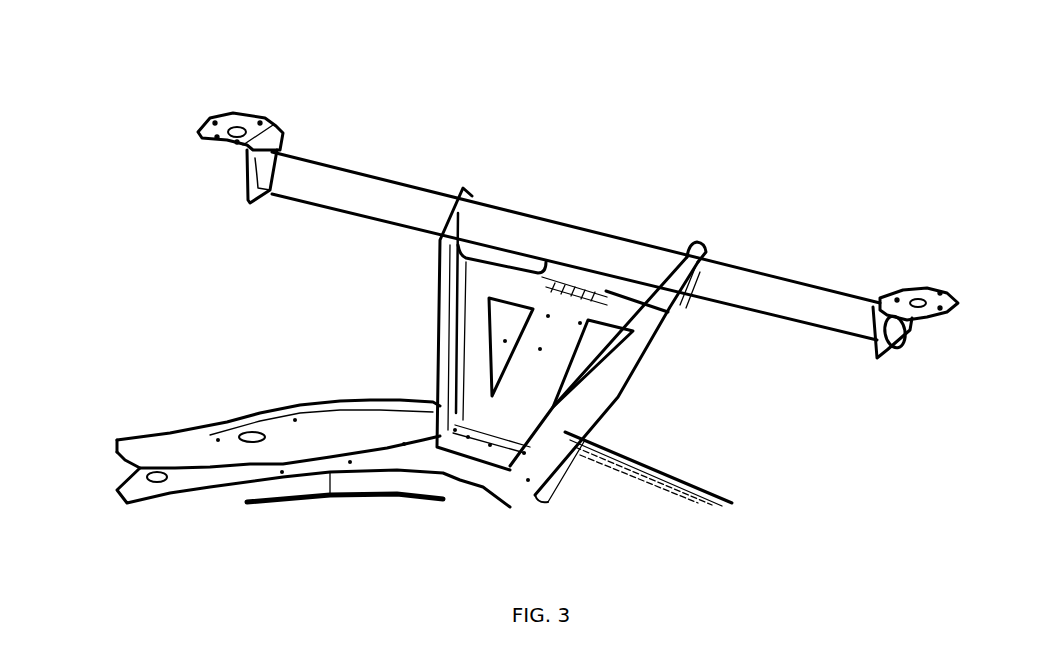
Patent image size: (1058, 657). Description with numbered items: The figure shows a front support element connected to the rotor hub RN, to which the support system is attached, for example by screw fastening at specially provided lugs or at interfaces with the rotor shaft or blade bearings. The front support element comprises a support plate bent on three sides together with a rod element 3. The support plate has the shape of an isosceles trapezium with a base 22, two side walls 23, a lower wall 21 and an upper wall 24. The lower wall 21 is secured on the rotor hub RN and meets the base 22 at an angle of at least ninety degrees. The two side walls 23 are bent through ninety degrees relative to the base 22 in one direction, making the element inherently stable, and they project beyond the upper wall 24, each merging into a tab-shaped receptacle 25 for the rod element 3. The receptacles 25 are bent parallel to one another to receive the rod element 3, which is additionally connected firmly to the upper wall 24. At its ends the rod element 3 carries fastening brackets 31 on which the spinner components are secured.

The rod element 3 is at (407, 193).
The lower wall 21 is at (455, 462).
The base 22 is at (550, 303).
The side walls 23 is at (640, 357).
The upper wall 24 is at (591, 276).
The tab-shaped receptacle 25 is at (700, 243).
The fastening brackets 31 is at (255, 120).
The rotor hub RN is at (210, 431).